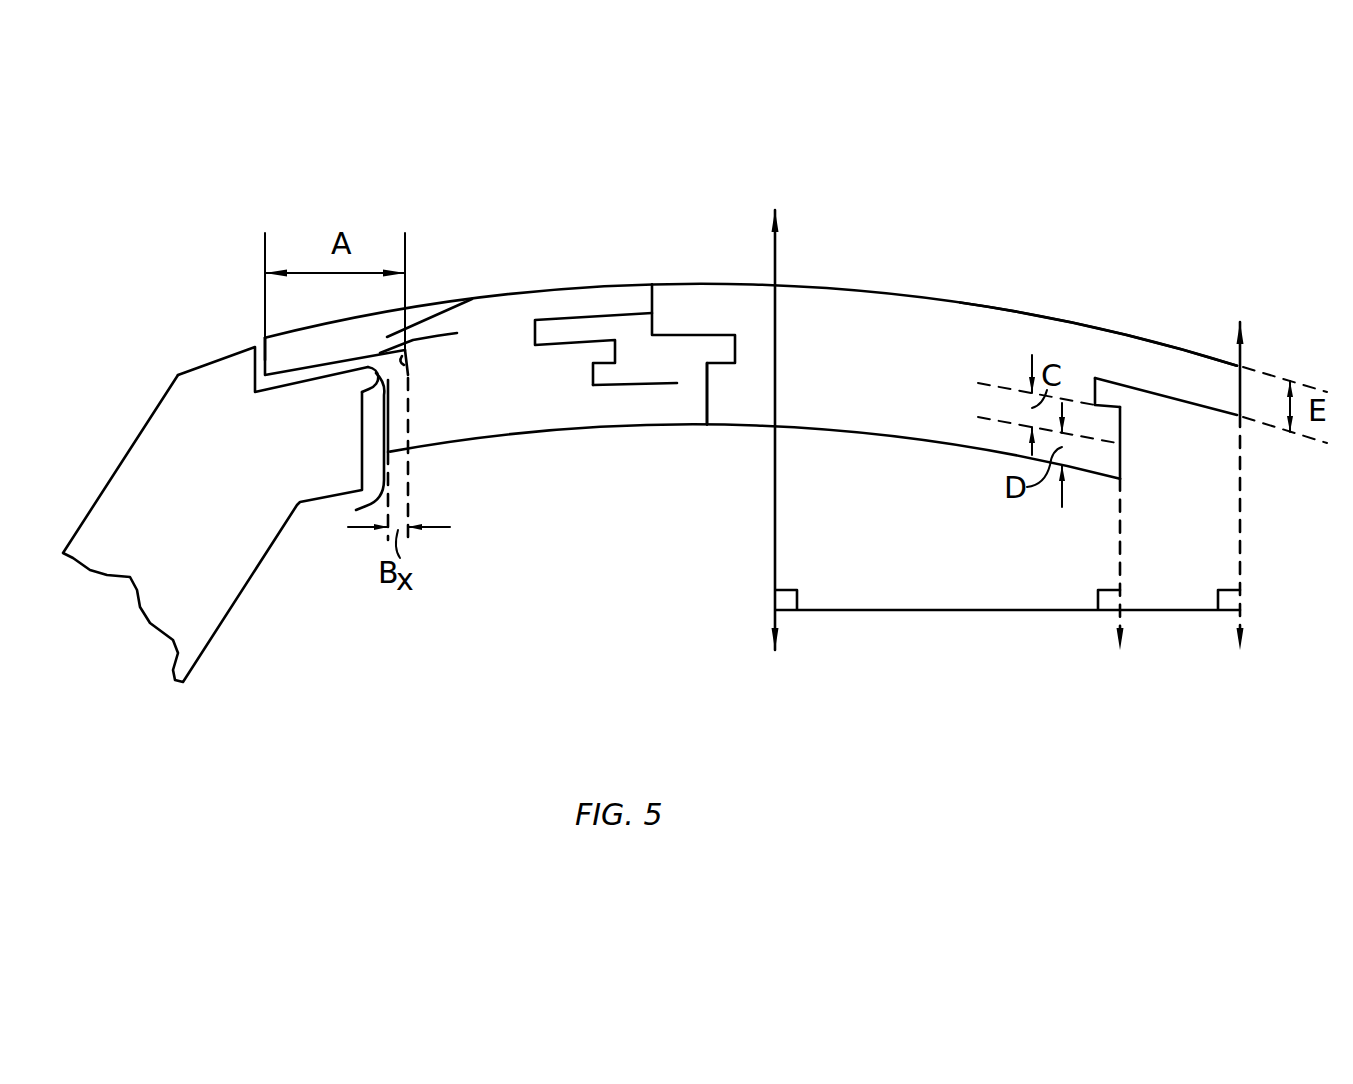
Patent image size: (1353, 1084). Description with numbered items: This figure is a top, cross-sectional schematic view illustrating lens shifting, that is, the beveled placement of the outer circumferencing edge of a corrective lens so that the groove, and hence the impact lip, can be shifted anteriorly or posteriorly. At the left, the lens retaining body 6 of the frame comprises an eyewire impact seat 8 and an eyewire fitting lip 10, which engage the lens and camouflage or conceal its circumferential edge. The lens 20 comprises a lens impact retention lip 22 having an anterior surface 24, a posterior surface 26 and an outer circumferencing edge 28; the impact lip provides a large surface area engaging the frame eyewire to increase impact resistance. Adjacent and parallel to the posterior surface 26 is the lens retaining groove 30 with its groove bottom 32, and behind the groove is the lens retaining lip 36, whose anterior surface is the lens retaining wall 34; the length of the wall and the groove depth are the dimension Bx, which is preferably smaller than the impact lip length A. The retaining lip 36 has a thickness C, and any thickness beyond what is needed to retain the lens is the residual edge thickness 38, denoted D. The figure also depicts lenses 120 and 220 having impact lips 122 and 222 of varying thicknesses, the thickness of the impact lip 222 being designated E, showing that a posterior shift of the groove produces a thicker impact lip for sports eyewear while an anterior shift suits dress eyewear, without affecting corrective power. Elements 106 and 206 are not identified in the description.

The lens retaining body 6 is at (181, 587).
The eyewire impact seat 8 is at (288, 386).
The eyewire fitting lip 10 is at (366, 374).
The lens 20 is at (427, 305).
The lens impact retention lip 22 is at (473, 299).
The anterior surface 24 is at (343, 323).
The posterior surface 26 is at (457, 333).
The outer circumferencing edge 28 is at (265, 360).
The lens retaining groove 30 is at (408, 383).
The groove bottom 32 is at (407, 362).
The lens retaining wall 34 is at (356, 510).
The lens retaining lip 36 is at (394, 394).
The residual edge thickness 38 is at (1103, 458).
The retainer 106 is at (598, 385).
The lens 120 is at (640, 333).
The impact lip 122 is at (598, 330).
The aft hanger leg 206 is at (718, 392).
The lens 220 is at (960, 302).
The impact lip 222 is at (703, 310).